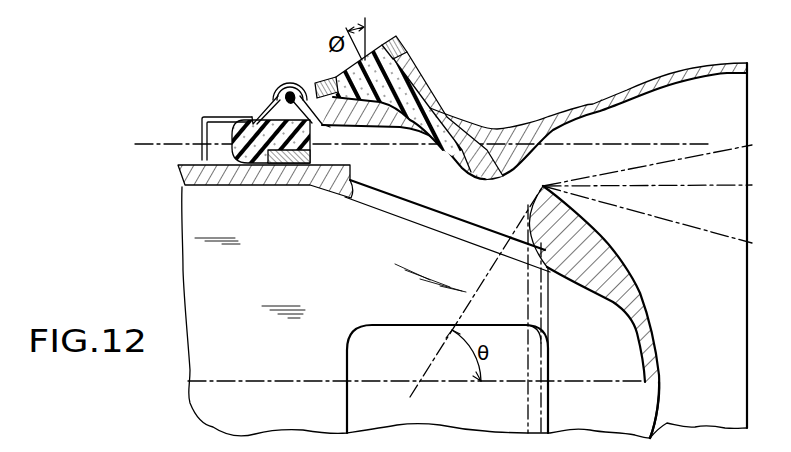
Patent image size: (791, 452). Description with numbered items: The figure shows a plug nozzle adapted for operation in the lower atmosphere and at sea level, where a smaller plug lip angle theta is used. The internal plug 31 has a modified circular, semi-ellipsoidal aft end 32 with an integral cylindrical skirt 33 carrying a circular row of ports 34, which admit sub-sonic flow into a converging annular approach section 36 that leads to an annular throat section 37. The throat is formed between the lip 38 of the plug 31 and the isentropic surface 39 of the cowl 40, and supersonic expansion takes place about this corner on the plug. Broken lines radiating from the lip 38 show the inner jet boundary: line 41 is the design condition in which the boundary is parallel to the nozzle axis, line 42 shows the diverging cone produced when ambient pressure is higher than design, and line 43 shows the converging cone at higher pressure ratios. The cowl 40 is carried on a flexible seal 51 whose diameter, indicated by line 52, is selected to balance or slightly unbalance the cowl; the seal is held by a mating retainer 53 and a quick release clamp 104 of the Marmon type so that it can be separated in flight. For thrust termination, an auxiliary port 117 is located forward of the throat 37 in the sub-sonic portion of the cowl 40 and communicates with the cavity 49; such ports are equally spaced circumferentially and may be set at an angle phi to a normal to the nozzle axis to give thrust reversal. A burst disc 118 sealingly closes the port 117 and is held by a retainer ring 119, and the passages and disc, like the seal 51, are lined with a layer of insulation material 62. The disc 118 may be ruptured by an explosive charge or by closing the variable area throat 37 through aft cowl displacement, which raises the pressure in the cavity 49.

The internal plug 31 is at (658, 358).
The semi-ellipsoidal aft end 32 is at (648, 305).
The cylindrical skirt 33 is at (195, 187).
The ports 34 is at (398, 218).
The converging annular approach section 36 is at (505, 225).
The annular throat section 37 is at (526, 168).
The lip 38 is at (544, 185).
The isentropic surface 39 is at (622, 97).
The cowl 40 is at (673, 66).
The design-condition jet boundary line 41 is at (660, 184).
The diverging jet boundary line 42 is at (662, 159).
The converging jet boundary line 43 is at (662, 220).
The cavity 49 is at (448, 128).
The flexible seal 51 is at (230, 127).
The seal diameter line 52 is at (422, 143).
The retainer 53 is at (270, 98).
The insulation material 62 is at (313, 135).
The clamp 104 is at (283, 84).
The auxiliary port 117 is at (422, 78).
The burst disc 118 is at (408, 50).
The retainer ring 119 is at (398, 37).